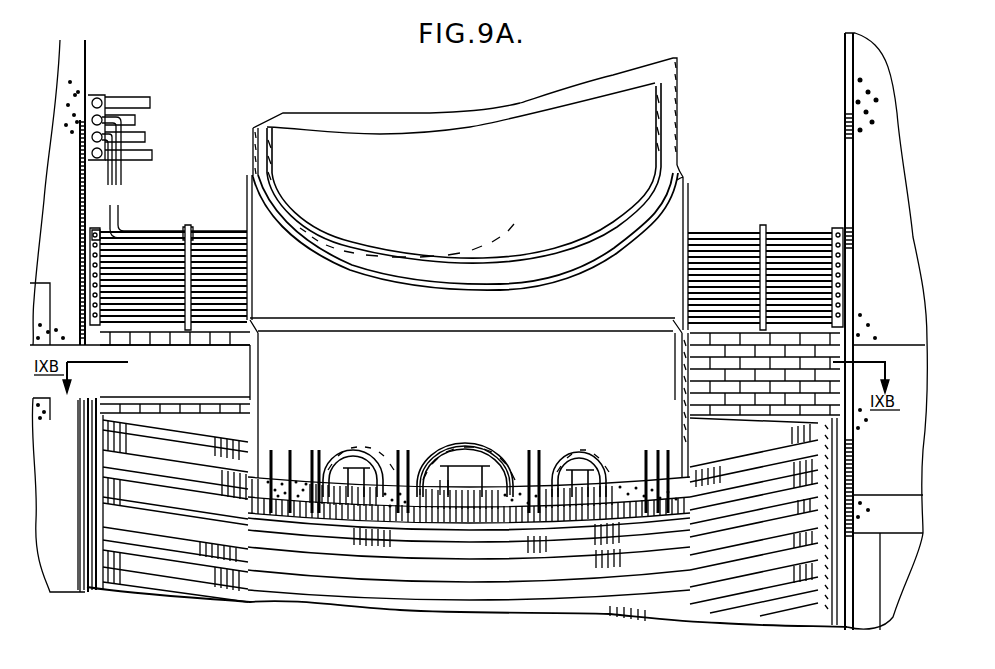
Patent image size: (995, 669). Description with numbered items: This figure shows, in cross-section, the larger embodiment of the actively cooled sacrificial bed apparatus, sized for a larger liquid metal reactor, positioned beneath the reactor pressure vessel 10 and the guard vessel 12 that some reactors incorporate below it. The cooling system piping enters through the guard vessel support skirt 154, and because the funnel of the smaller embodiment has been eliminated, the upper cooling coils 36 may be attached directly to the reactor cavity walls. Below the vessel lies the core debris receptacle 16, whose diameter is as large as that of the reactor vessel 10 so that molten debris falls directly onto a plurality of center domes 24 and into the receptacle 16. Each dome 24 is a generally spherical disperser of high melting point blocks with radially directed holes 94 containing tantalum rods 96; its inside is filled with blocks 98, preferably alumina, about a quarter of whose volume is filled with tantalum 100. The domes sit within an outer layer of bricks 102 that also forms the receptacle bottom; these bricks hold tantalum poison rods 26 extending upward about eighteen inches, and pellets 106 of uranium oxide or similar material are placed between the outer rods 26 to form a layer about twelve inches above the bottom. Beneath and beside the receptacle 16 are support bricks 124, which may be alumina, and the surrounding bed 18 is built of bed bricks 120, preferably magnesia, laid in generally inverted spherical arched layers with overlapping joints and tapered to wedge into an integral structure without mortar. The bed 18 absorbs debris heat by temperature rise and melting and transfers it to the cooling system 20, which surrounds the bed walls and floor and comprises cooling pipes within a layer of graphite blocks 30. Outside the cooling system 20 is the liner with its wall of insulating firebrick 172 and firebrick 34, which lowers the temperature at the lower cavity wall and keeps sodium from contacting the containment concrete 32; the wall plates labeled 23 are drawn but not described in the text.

The reactor pressure vessel 10 is at (656, 120).
The guard vessel 12 is at (677, 104).
The guard vessel support skirt 154 is at (685, 185).
The upper cooling coils 36 is at (93, 290).
The core debris receptacle 16 is at (260, 415).
The tantalum poison rods 26 is at (270, 453).
The center dome 24 is at (357, 450).
The radially directed holes 94 is at (471, 447).
The tantalum rods 96 is at (465, 470).
The pellets 106 is at (517, 490).
The blocks 98 is at (440, 523).
The tantalum 100 is at (485, 494).
The outer layer of bricks 102 is at (627, 522).
The bed bricks 120 is at (613, 552).
The support bricks 124 is at (387, 540).
The bed 18 is at (360, 567).
The firebrick 34 is at (84, 480).
The wall plate 23 is at (83, 523).
The insulating firebrick 172 is at (80, 575).
The cooling system 20 is at (853, 455).
The graphite blocks 30 is at (853, 488).
The containment concrete 32 is at (913, 520).